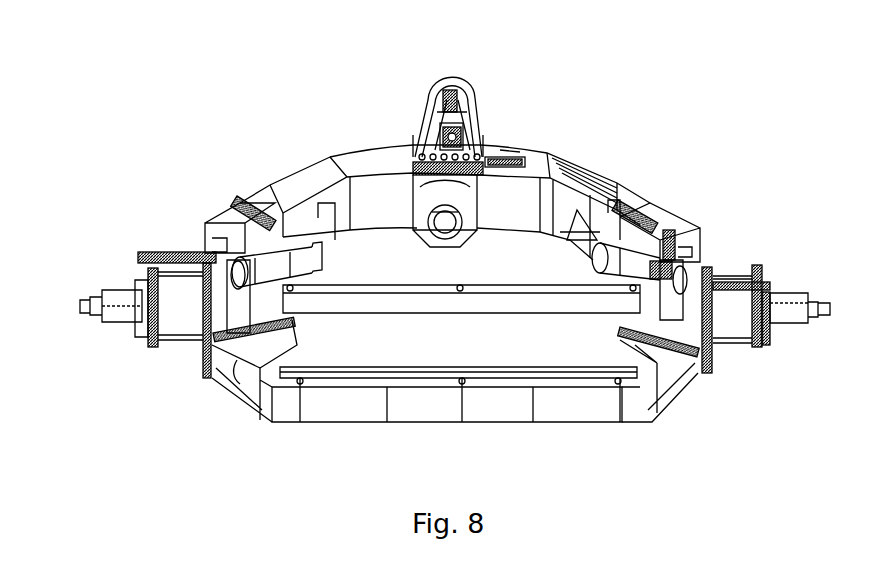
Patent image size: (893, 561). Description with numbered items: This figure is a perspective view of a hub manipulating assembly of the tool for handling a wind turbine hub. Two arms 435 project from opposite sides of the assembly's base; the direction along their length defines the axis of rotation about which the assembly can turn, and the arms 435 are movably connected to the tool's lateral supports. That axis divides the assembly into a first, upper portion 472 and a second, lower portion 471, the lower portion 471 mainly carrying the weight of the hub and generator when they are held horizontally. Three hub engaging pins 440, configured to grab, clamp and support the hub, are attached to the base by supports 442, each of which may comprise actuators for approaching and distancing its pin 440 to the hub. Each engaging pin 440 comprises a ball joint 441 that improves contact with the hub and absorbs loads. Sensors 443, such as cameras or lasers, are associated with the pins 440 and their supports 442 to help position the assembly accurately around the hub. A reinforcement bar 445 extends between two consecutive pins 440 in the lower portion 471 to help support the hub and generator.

The arm 435 is at (142, 303).
The hub engaging pin 440 is at (350, 262).
The ball joint 441 is at (466, 150).
The support for the hub engaging pin 442 is at (478, 150).
The sensor 443 is at (467, 84).
The reinforcement bar 445 is at (363, 297).
The second portion 471 is at (535, 432).
The first portion 472 is at (393, 122).